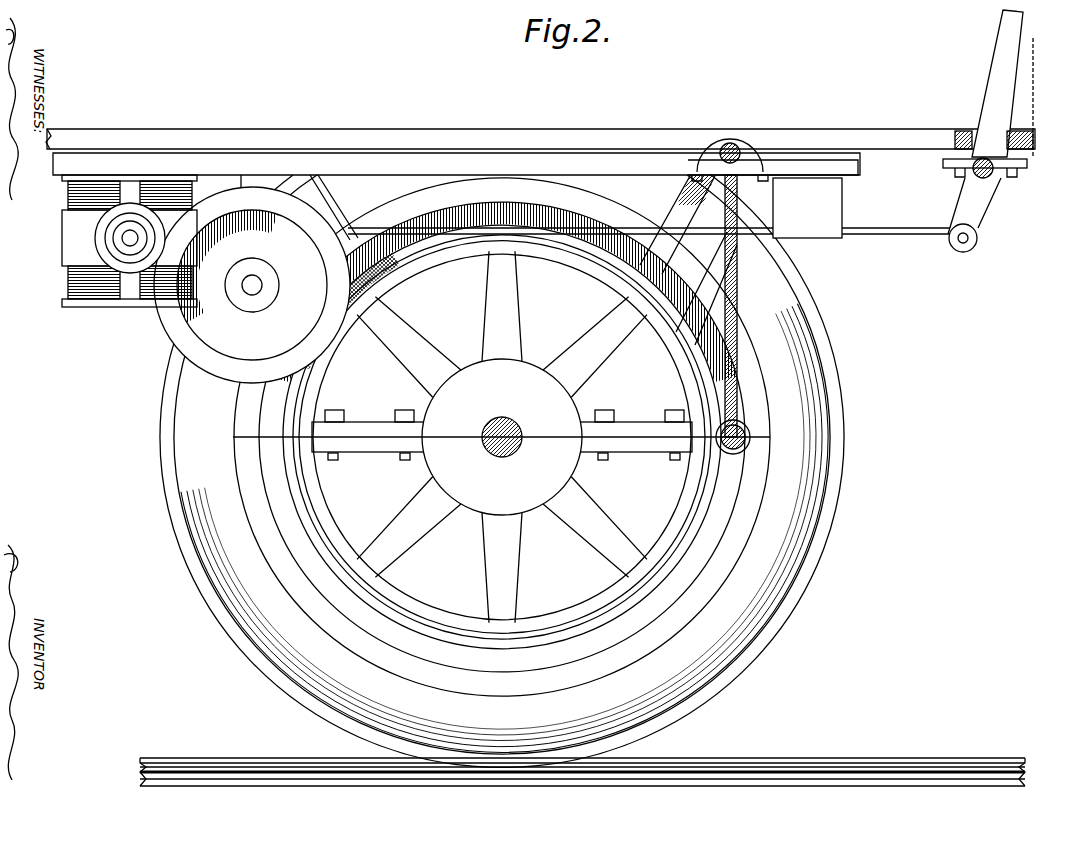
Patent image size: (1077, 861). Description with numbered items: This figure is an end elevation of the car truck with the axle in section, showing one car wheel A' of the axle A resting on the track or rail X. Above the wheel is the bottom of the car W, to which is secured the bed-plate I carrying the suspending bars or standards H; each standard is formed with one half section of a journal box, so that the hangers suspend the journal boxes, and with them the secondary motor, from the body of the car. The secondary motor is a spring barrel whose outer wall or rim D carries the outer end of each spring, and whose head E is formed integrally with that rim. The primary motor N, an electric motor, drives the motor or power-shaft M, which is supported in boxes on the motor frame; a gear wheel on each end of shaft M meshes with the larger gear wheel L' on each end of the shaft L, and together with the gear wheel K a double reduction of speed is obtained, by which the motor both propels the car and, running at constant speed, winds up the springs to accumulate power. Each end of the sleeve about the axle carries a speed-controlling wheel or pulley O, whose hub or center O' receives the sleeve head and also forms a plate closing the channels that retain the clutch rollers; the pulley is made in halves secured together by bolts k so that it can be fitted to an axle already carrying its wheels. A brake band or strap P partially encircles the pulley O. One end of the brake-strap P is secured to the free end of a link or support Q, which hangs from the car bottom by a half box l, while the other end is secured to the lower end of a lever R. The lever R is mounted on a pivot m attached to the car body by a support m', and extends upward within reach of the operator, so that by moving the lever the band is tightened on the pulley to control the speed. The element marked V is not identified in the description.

The bottom of the car W is at (470, 129).
The bed-plate I is at (456, 164).
The half box l is at (741, 163).
The link or support Q is at (735, 311).
The suspending bars or standards H is at (677, 235).
The head for the barrel or cylinder E is at (706, 291).
The box V is at (807, 208).
The lever R is at (994, 83).
The pivot m is at (983, 215).
The support m' is at (998, 181).
The gear wheel L' is at (256, 279).
The shaft L is at (243, 299).
The motor or power-shaft M is at (128, 239).
The primary motor N is at (129, 237).
The motor base N' is at (108, 275).
The wheel A' is at (520, 471).
The outer wall or rim of the barrel or cylinder D is at (510, 437).
The brake band or strap P is at (745, 556).
The speed-controlling wheel or pulley O is at (502, 436).
The hub or center O' is at (502, 437).
The axle A is at (501, 458).
The gear wheel K is at (400, 387).
The bolts k is at (674, 410).
The track or rail X is at (582, 747).